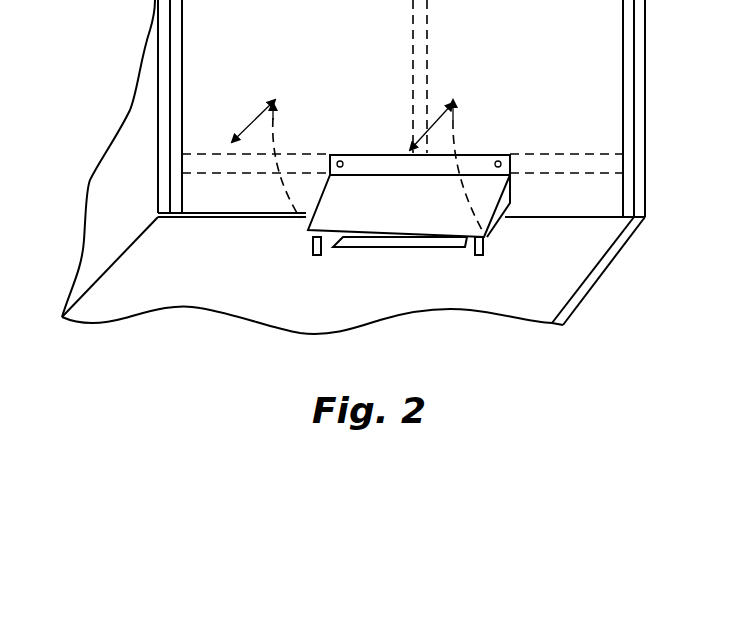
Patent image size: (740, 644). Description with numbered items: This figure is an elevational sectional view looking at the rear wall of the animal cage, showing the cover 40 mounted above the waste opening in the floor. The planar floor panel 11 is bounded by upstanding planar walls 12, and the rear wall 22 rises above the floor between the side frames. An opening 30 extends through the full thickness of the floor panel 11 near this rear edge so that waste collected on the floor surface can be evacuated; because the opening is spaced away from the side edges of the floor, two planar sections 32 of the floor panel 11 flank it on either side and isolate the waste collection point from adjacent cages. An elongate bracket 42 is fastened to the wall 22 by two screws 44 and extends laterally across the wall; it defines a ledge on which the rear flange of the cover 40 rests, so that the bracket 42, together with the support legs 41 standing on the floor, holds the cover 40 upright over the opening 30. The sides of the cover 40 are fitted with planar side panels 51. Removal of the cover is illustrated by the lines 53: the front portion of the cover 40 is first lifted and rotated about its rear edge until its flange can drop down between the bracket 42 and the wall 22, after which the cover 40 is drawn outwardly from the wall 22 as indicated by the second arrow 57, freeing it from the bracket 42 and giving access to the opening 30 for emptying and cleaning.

The floor panel 11 is at (239, 310).
The upstanding planar walls 12 is at (129, 225).
The wall 22 is at (375, 31).
The opening 30 is at (412, 248).
The planar sections 32 is at (219, 255).
The cover 40 is at (419, 227).
The support legs 41 is at (313, 257).
The bracket 42 is at (480, 154).
The screws 44 is at (505, 155).
The planar side panels 51 is at (507, 212).
The lines 53 is at (275, 133).
The second arrow 57 is at (252, 122).